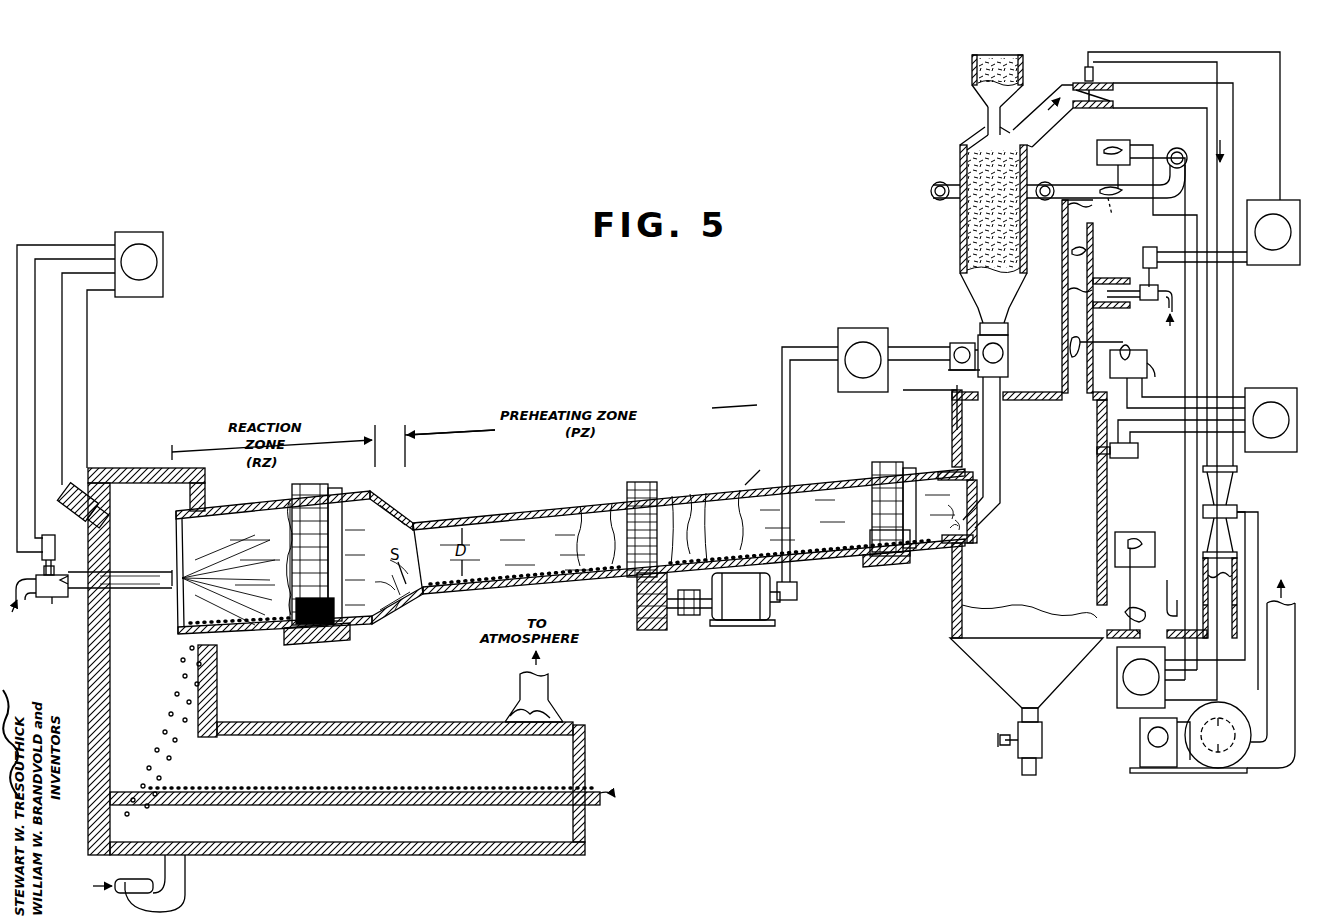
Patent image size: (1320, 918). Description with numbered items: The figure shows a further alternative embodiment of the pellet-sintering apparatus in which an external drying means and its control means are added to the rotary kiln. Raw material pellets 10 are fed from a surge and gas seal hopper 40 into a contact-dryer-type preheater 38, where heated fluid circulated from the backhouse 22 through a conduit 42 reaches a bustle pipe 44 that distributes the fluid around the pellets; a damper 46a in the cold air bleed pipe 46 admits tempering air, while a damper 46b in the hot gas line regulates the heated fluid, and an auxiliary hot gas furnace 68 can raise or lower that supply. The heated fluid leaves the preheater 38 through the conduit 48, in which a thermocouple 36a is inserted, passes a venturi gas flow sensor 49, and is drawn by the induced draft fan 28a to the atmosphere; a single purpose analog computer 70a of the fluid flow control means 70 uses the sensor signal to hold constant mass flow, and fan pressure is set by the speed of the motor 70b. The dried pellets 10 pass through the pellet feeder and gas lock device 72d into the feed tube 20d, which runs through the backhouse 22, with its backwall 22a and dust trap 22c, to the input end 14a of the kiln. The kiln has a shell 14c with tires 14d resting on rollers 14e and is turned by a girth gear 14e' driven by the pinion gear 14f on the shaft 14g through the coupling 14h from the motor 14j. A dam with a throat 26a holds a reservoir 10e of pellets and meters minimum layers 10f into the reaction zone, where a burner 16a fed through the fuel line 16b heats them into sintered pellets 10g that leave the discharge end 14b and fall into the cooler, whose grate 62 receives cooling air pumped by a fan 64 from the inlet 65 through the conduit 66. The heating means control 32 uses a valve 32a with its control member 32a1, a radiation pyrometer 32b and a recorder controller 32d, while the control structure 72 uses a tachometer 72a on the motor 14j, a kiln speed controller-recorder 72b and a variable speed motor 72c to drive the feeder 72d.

The raw material pellets 10 is at (983, 89).
The reservoir of raw material pellets 10e is at (505, 564).
The minimum layers of raw material pellets 10f is at (240, 582).
The sintered pellets 10g is at (158, 733).
The input end 14a is at (973, 520).
The discharge end 14b is at (180, 623).
The shell 14c is at (692, 500).
The tires 14d is at (302, 493).
The rollers 14e is at (597, 597).
The girth gear 14e' is at (653, 512).
The pinion gear 14f is at (640, 630).
The shaft 14g is at (676, 610).
The coupling 14h is at (695, 615).
The motor 14j is at (745, 620).
The burner 16a is at (140, 590).
The fuel line 16b is at (50, 604).
The feed tube 20d is at (1000, 452).
The backhouse 22 is at (965, 670).
The backwall 22a is at (1100, 542).
The dust trap 22c is at (1042, 755).
The throat 26a is at (465, 523).
The induced draft fan 28a is at (1230, 765).
The heating means control 32 is at (140, 298).
The valve 32a is at (60, 598).
The control member 32a1 is at (68, 530).
The radiation pyrometer 32b is at (74, 490).
The recorder controller 32d is at (163, 282).
The thermocouple 36a is at (1096, 72).
The contact-dryer-type preheater 38 is at (958, 243).
The surge and gas seal hopper 40 is at (971, 70).
The conduit 42 is at (1060, 243).
The bustle pipe 44 is at (1043, 182).
The cold air bleed pipe 46 is at (1080, 180).
The damper 46a is at (1108, 211).
The damper 46b is at (1068, 355).
The conduit 48 is at (1035, 103).
The venturi gas flow sensor 49 is at (1240, 500).
The grate 62 is at (350, 806).
The fan 64 is at (176, 897).
The inlet 65 is at (118, 893).
The conduit 66 is at (186, 863).
The auxiliary hot gas furnace 68 is at (1102, 310).
The fluid flow control means 70 is at (1203, 500).
The single purpose analog computer 70a is at (1115, 698).
The motor 70b is at (1138, 745).
The control structure 72 is at (836, 320).
The tachometer 72a is at (790, 600).
The kiln speed controller-recorder 72b is at (877, 332).
The variable speed motor 72c is at (956, 344).
The pellet feeder and gas lock device 72d is at (1010, 342).